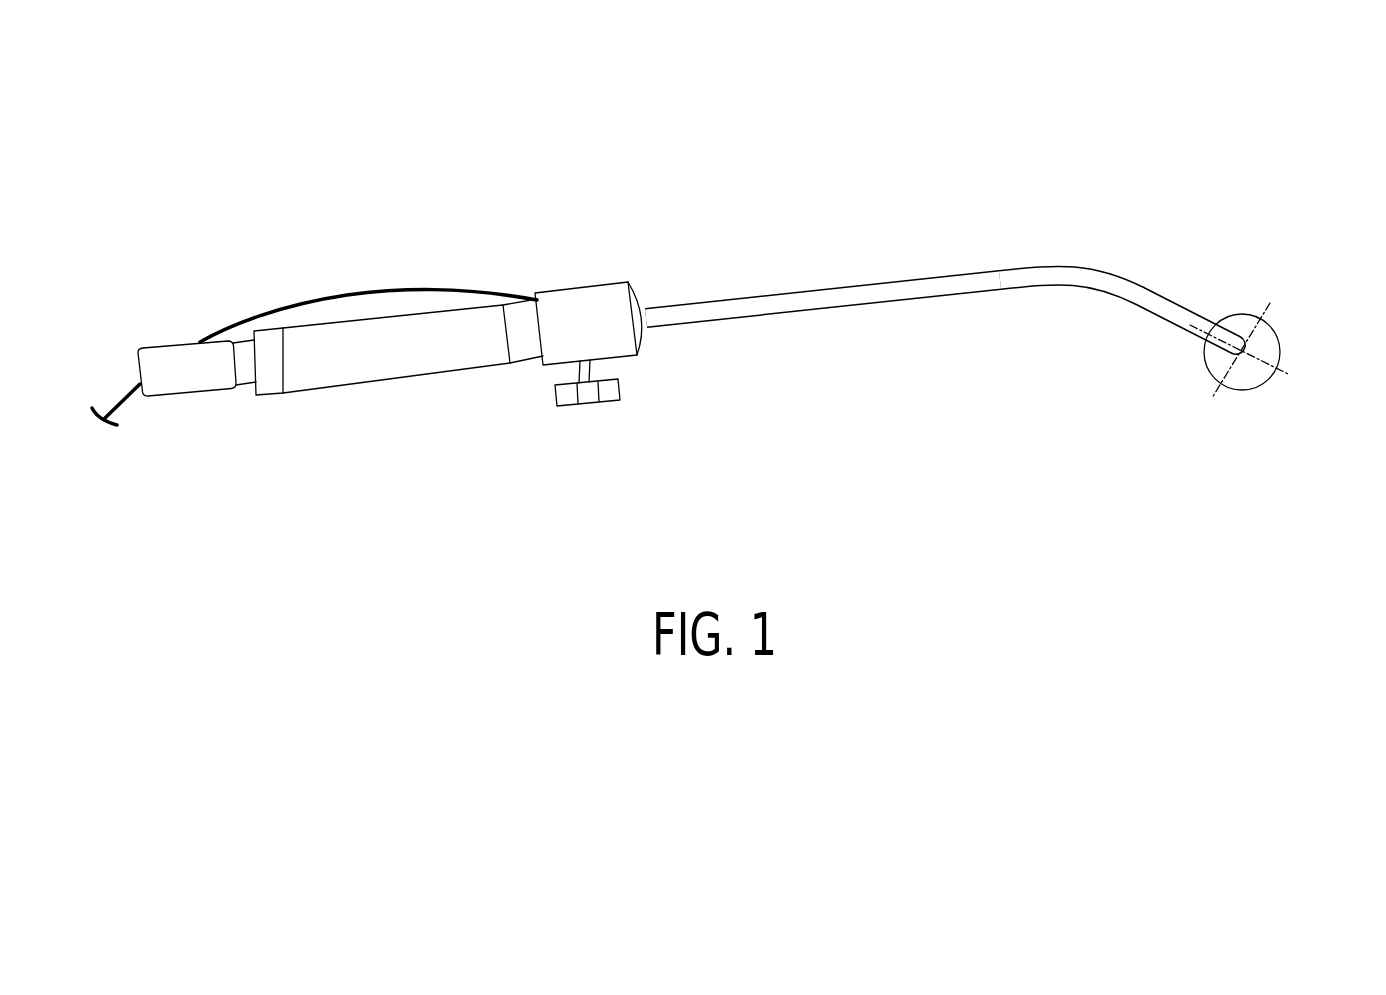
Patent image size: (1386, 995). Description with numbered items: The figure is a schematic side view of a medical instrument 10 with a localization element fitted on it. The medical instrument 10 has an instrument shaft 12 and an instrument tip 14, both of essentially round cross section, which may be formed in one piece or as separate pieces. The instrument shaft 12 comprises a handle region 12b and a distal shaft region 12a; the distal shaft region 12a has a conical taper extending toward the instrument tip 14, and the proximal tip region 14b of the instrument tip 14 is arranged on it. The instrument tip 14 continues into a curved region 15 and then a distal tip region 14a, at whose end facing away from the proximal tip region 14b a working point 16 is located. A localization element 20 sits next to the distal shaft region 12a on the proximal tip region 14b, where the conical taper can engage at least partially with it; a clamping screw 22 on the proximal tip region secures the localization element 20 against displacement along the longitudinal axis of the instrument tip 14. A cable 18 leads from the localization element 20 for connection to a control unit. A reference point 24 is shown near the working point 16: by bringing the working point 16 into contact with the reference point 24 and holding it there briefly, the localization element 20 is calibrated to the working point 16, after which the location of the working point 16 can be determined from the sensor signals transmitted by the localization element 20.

The medical instrument 10 is at (718, 264).
The instrument shaft 12 is at (341, 362).
The distal shaft region 12a is at (517, 313).
The handle region 12b is at (332, 425).
The instrument tip 14 is at (995, 302).
The distal tip region 14a is at (1228, 268).
The proximal tip region 14b is at (665, 250).
The curved region 15 is at (1118, 228).
The working point 16 is at (1208, 370).
The cable 18 is at (387, 291).
The localization element 20 is at (580, 297).
The clamping screw 22 is at (590, 393).
The reference point 24 is at (1277, 333).